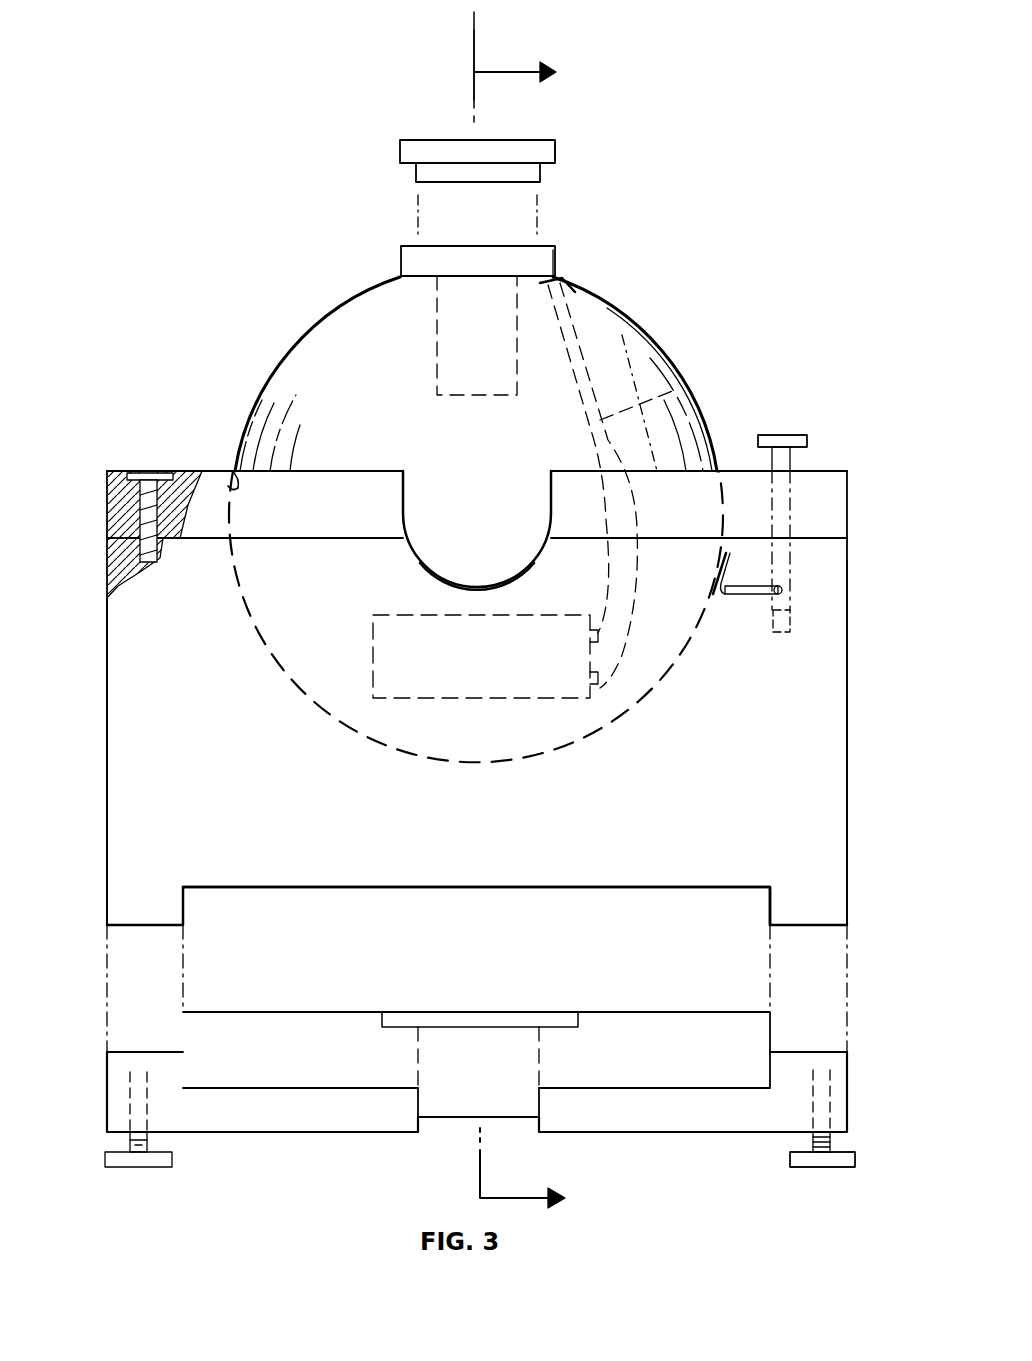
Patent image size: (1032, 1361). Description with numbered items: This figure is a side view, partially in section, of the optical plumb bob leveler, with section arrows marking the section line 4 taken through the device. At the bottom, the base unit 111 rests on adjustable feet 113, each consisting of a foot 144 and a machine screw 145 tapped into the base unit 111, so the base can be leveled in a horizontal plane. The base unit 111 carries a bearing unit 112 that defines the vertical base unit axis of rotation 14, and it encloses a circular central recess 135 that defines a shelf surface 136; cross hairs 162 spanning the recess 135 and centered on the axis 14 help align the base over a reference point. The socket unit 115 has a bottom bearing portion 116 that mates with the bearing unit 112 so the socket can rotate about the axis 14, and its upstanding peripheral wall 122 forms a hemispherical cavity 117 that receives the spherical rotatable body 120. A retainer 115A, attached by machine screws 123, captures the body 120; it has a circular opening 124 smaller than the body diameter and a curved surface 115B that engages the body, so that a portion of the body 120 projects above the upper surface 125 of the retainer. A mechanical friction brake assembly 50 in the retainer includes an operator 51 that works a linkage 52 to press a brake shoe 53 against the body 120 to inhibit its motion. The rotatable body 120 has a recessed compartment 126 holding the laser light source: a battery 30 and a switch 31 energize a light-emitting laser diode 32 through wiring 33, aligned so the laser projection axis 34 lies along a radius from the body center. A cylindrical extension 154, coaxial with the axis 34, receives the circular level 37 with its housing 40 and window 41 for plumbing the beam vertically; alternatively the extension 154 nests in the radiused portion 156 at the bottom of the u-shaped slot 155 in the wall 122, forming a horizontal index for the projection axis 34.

The section line 4- 4 is at (530, 637).
The base unit axis of rotation 14 is at (472, 22).
The laser projection axis 34 is at (499, 55).
The housing 40 is at (400, 150).
The window 41 is at (416, 172).
The circular level 37 is at (555, 152).
The recessed compartment 126 is at (432, 245).
The cylindrical extension 154 is at (555, 265).
The switch 31 is at (560, 282).
The rotatable body 120 is at (316, 332).
The wiring 33 is at (677, 395).
The circular opening 124 is at (737, 471).
The light-emitting laser diode 32 is at (478, 398).
The upper surface 125 is at (847, 517).
The u-shaped slot 155 is at (403, 513).
The radiused portion 156 is at (430, 562).
The curved surface 115B is at (232, 468).
The hemispherical cavity 117 is at (282, 670).
The machine screws 123 is at (152, 470).
The retainer 115A is at (180, 472).
The battery 30 is at (507, 700).
The mechanical friction brake assembly 50 is at (812, 461).
The operator 51 is at (818, 420).
The linkage 52 is at (790, 586).
The brake shoe 53 is at (717, 610).
The upstanding peripheral wall 122 is at (820, 652).
The socket unit 115 is at (847, 726).
The bottom bearing portion 116 is at (770, 903).
The bearing unit 112 is at (252, 1012).
The shelf surface 136 is at (352, 1012).
The circular central recess 135 is at (495, 1075).
The base unit 111 is at (850, 1090).
The cross hairs 162 is at (477, 1119).
The machine screw 145 is at (812, 1142).
The foot 144 is at (835, 1160).
The adjustable feet 113 is at (108, 1165).